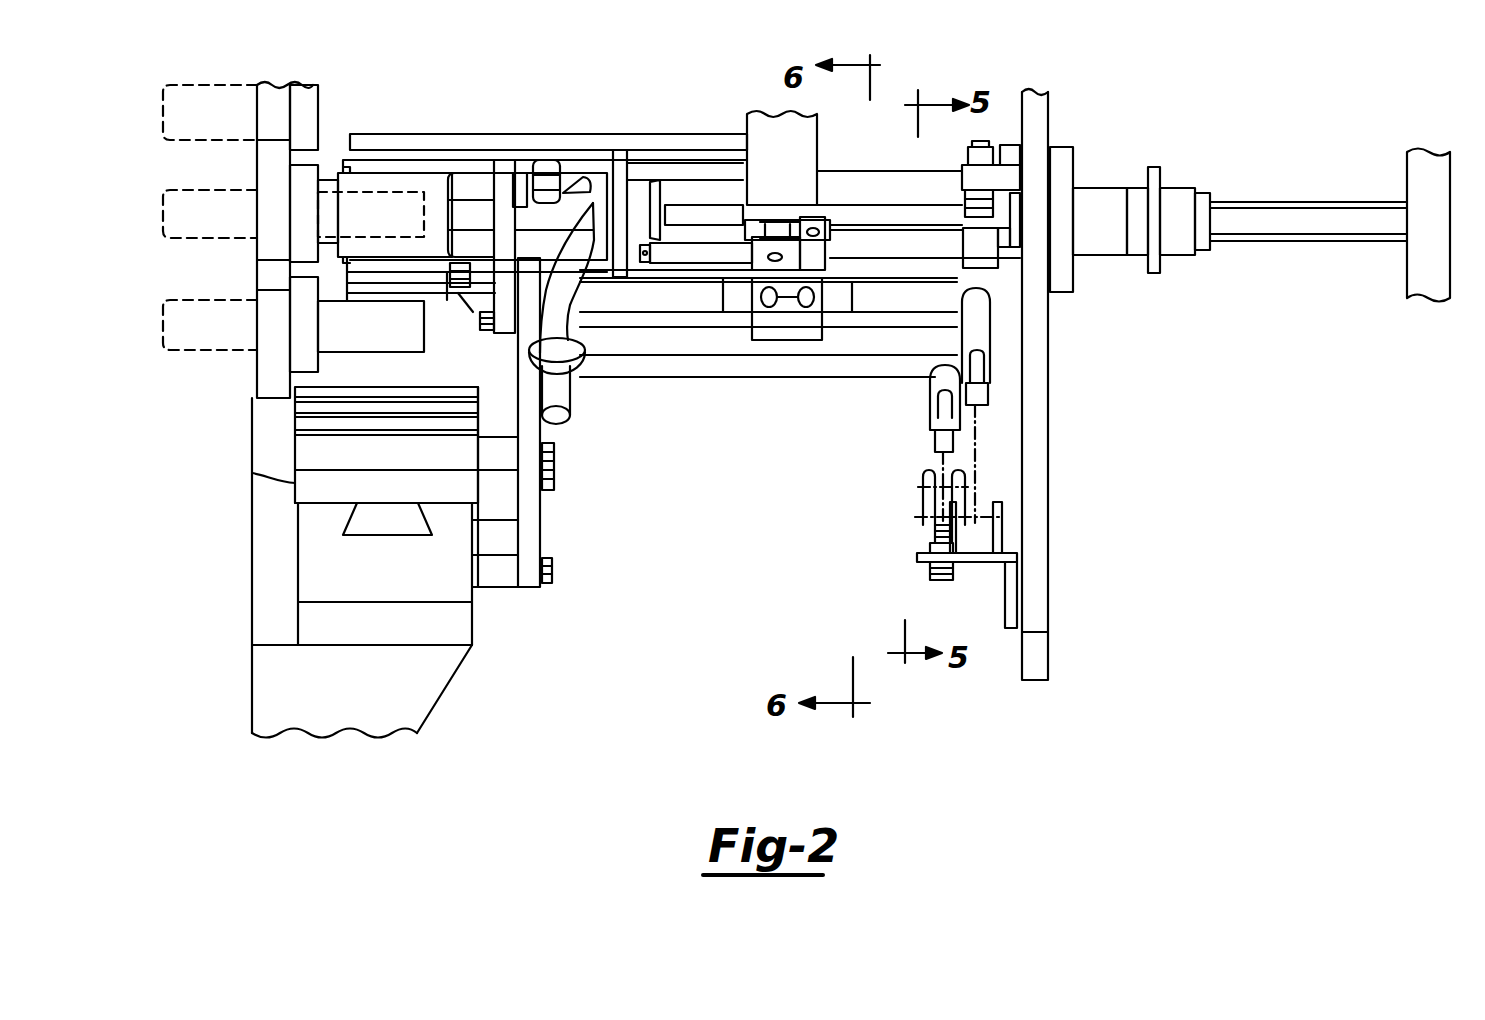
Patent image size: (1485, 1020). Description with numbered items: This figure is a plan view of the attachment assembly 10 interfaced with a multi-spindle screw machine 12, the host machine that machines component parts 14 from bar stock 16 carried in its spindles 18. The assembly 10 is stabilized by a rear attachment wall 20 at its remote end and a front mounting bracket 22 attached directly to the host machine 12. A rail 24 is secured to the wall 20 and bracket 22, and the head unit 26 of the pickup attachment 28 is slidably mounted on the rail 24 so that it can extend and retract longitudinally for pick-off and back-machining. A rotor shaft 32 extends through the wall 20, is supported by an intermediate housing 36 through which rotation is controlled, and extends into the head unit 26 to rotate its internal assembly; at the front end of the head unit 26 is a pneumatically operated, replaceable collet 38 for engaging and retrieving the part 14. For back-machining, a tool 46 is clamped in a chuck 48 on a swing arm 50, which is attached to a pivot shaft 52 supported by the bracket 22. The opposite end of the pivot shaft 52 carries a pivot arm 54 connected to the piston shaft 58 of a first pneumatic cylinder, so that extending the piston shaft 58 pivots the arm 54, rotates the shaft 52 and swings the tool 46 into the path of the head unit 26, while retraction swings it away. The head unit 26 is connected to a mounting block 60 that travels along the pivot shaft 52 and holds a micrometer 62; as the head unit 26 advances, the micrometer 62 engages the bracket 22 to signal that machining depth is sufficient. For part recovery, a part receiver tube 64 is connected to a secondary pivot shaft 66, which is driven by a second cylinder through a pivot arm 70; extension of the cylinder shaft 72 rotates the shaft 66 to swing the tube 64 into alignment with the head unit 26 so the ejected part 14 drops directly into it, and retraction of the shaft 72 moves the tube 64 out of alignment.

The attachment assembly 10 is at (1096, 582).
The multi-spindle screw machine 12 is at (249, 370).
The component part 14 is at (367, 320).
The bar stock 16 is at (208, 203).
The spindle 18 is at (314, 117).
The rear attachment wall 20 is at (1040, 494).
The front mounting bracket 22 is at (533, 525).
The rail 24 is at (470, 307).
The head unit 26 is at (473, 180).
The pickup attachment 28 is at (827, 171).
The rotor shaft 32 is at (1270, 215).
The intermediate housing 36 is at (1094, 188).
The collet 38 is at (357, 172).
The tool 46 is at (580, 182).
The chuck 48 is at (547, 158).
The swing arm 50 is at (507, 290).
The pivot shaft 52 is at (673, 303).
The pivot arm 54 is at (985, 320).
The piston shaft 58 is at (990, 395).
The mounting block 60 is at (787, 318).
The micrometer 62 is at (657, 186).
The part receiver tube 64 is at (570, 295).
The secondary pivot shaft 66 is at (720, 363).
The pivot arm 70 is at (933, 372).
The cylinder shaft 72 is at (933, 442).